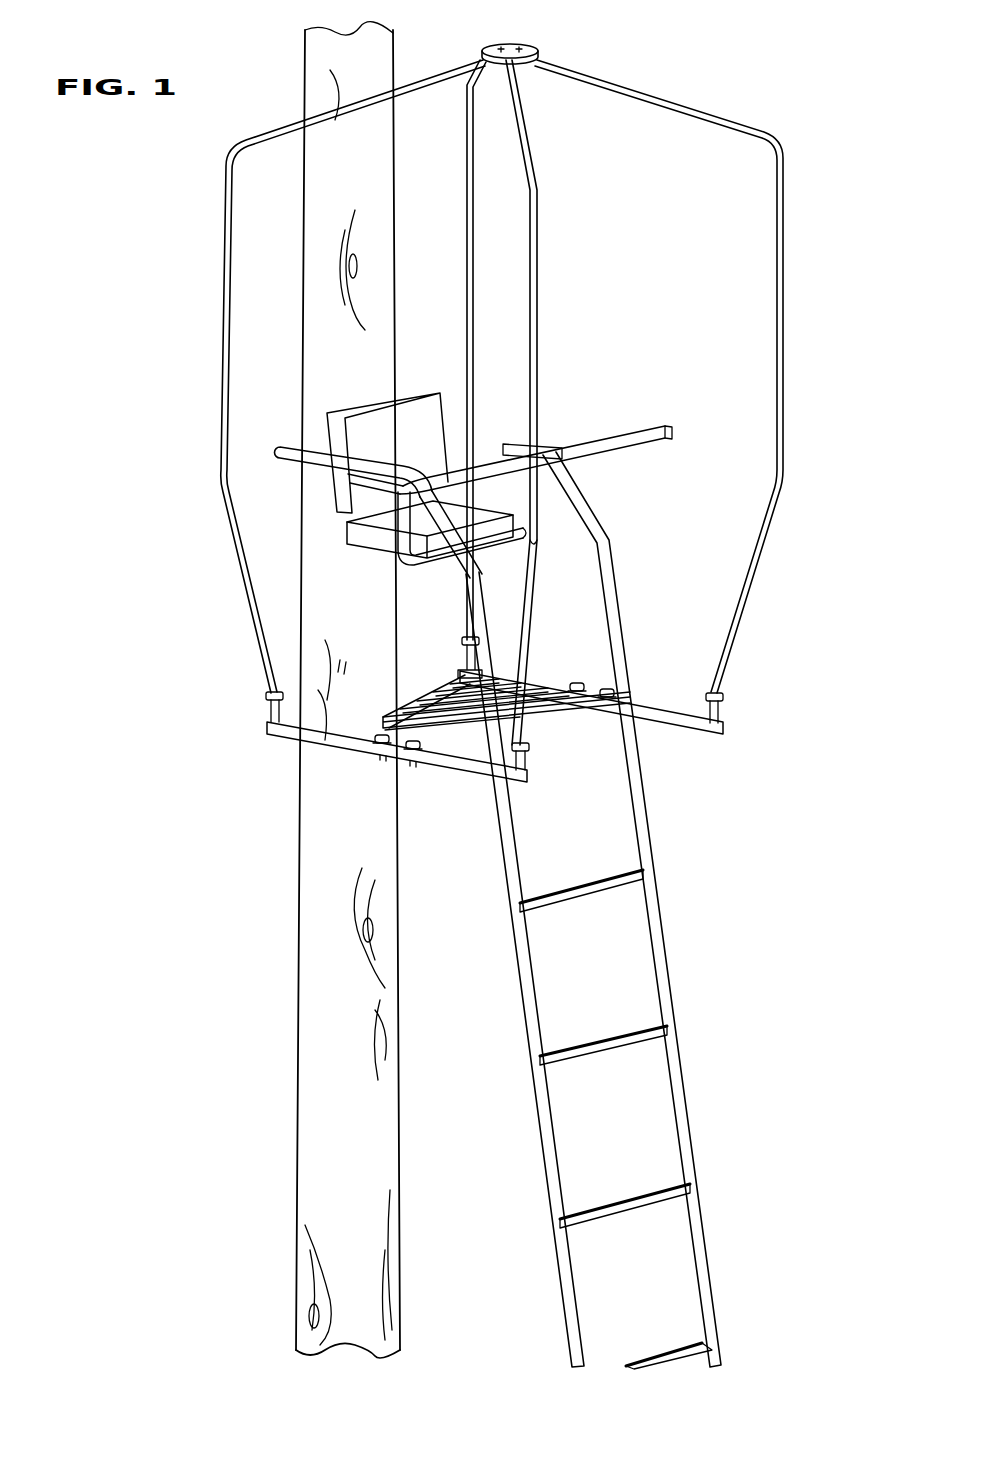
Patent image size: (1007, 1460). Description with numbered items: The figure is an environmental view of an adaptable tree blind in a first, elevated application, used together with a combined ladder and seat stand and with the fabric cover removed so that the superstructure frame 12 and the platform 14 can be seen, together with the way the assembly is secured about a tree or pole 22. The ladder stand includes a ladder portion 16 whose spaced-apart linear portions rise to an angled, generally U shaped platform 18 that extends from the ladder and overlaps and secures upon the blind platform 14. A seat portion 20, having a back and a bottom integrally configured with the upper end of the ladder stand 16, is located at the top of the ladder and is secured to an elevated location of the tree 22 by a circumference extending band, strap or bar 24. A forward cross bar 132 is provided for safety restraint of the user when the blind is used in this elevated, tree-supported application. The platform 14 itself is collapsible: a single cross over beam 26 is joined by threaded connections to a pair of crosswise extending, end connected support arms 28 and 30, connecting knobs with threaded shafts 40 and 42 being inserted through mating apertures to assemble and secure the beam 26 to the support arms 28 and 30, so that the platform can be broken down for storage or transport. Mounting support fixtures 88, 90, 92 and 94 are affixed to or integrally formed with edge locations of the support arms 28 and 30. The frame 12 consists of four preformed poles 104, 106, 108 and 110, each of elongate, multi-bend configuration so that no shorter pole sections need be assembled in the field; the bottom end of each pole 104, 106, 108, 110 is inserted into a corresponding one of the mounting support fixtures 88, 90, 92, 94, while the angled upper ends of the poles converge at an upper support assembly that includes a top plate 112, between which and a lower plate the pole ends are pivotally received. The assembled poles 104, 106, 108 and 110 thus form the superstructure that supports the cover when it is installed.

The frame 12 is at (471, 377).
The platform 14 is at (488, 718).
The ladder portion 16 is at (520, 990).
The U shaped platform 18 is at (447, 703).
The seat portion 20 is at (400, 423).
The tree or pole 22 is at (307, 93).
The circumference extending band 24 is at (297, 474).
The cross over beam 26 is at (573, 718).
The support arm 28 is at (332, 745).
The support arm 30 is at (663, 702).
The connecting knob 40 is at (372, 733).
The connecting knob 42 is at (605, 687).
The mounting support fixture 88 is at (508, 772).
The mounting support fixture 90 is at (268, 712).
The mounting support fixture 92 is at (722, 712).
The mounting support fixture 94 is at (460, 655).
The pole 104 is at (467, 143).
The pole 106 is at (223, 222).
The pole 108 is at (528, 127).
The pole 110 is at (645, 92).
The top plate 112 is at (508, 46).
The forward cross bar 132 is at (603, 432).